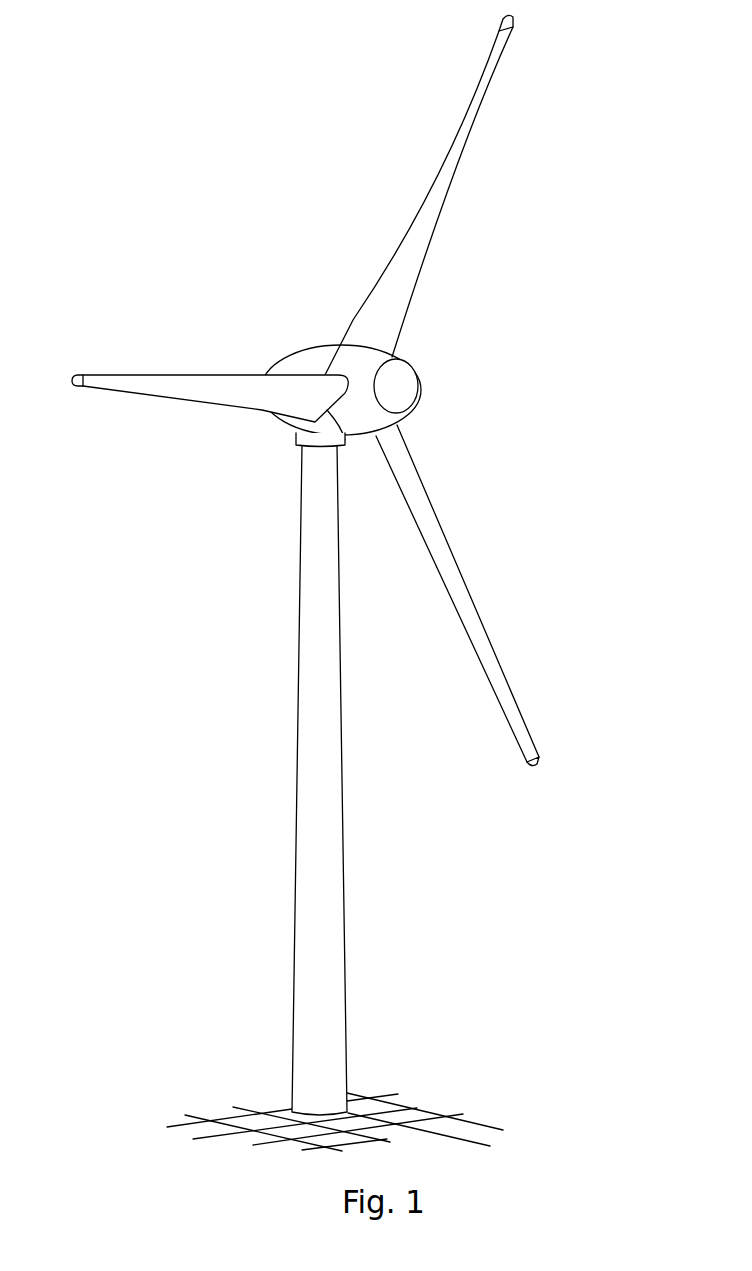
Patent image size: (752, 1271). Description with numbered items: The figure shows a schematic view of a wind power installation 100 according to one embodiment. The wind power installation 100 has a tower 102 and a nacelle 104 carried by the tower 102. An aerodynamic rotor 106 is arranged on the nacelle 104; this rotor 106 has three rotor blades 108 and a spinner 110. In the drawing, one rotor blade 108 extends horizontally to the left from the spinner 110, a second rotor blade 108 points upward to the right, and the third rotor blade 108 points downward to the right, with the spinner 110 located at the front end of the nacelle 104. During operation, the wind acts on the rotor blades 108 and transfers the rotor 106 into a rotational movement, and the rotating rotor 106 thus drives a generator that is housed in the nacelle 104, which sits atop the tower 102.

The wind power installation 100 is at (347, 583).
The tower 102 is at (333, 853).
The nacelle 104 is at (315, 367).
The aerodynamic rotor 106 is at (347, 390).
The rotor blades 108 is at (455, 148).
The spinner 110 is at (402, 385).